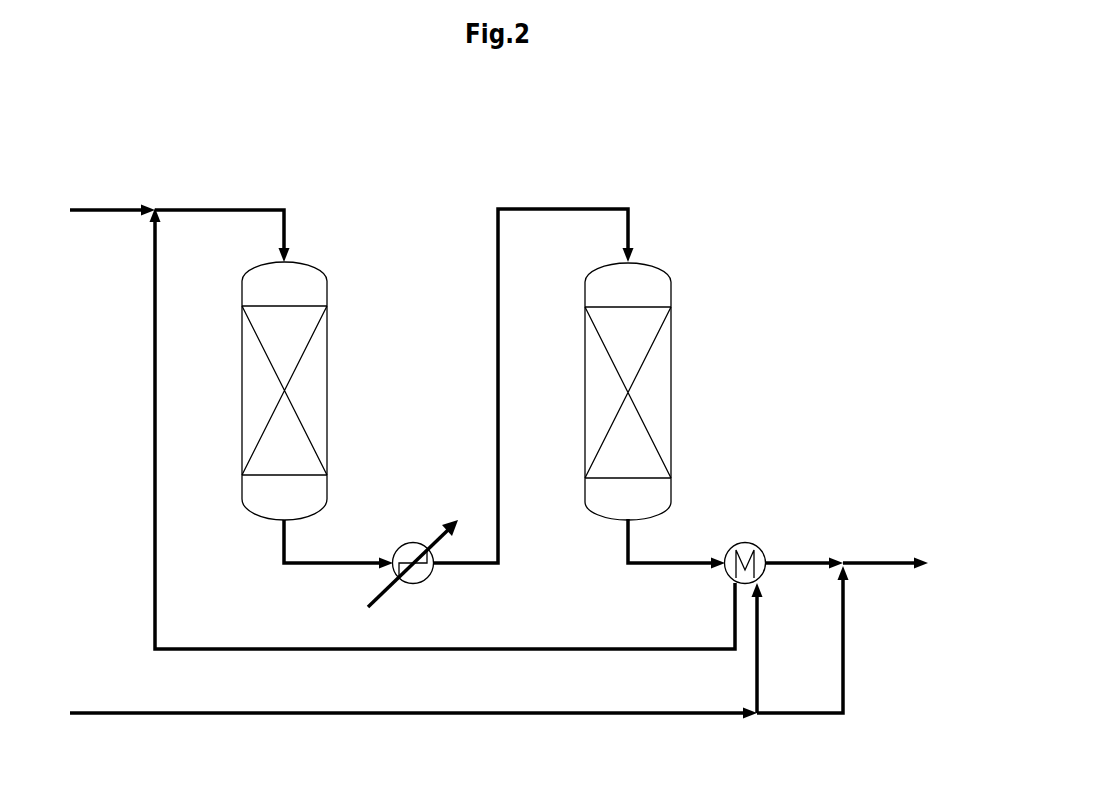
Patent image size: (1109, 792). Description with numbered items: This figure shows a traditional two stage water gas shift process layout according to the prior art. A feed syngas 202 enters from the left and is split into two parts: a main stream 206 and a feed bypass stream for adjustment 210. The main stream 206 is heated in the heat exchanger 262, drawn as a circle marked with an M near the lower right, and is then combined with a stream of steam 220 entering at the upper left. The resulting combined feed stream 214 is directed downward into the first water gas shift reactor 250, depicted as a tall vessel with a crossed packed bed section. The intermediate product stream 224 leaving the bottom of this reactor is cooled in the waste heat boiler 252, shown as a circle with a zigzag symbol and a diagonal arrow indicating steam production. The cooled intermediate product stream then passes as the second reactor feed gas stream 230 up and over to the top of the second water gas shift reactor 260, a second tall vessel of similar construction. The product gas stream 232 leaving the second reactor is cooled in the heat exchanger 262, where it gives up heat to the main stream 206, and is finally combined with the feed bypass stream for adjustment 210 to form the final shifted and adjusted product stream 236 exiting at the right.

The feed syngas 202 is at (101, 717).
The main stream 206 is at (757, 650).
The feed bypass stream for adjustment 210 is at (843, 650).
The combined feed stream 214 is at (225, 212).
The steam 220 is at (101, 212).
The intermediate product stream 224 is at (315, 567).
The second reactor feed gas stream 230 is at (568, 212).
The product gas stream 232 is at (665, 567).
The shifted and adjusted product stream 236 is at (866, 567).
The first water gas shift reactor 250 is at (327, 393).
The waste heat boiler 252 is at (424, 578).
The second water gas shift reactor 260 is at (671, 393).
The heat exchanger 262 is at (760, 550).